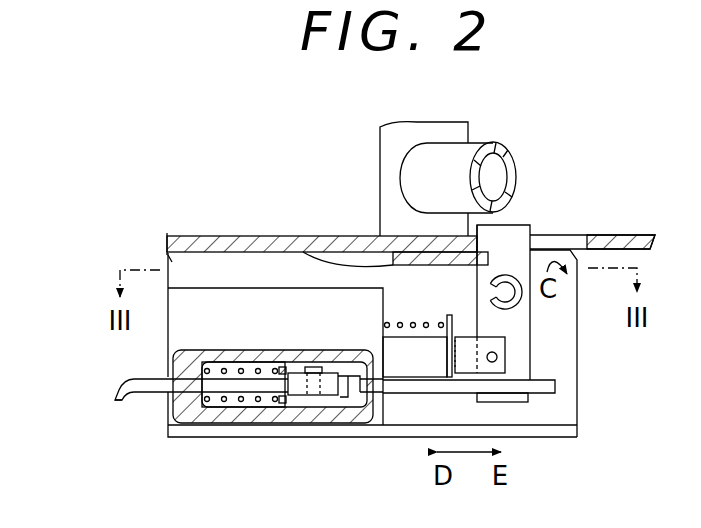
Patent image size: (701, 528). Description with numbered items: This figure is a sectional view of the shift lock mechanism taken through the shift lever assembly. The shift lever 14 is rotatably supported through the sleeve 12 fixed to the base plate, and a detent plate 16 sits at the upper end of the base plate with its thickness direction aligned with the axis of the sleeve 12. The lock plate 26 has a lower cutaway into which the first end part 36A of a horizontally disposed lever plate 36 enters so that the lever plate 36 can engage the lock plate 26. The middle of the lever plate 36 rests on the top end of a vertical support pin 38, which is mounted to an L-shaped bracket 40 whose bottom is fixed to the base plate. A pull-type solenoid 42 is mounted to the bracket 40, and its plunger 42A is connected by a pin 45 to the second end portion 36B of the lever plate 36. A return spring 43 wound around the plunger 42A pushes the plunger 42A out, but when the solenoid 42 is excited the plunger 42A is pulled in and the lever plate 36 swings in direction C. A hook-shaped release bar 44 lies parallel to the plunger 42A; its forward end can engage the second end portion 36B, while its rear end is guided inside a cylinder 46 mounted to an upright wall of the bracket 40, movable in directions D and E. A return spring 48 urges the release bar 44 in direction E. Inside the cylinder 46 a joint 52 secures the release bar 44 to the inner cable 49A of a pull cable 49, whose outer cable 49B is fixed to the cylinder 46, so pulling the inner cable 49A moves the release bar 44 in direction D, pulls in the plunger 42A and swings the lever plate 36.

The sleeve 12 is at (380, 165).
The shift lever 14 is at (495, 132).
The detent plate 16 is at (633, 240).
The lock plate 26 is at (298, 238).
The lever plate 36 is at (535, 292).
The first end part of lever plate 36A is at (507, 247).
The second end portion of lever plate 36B is at (520, 367).
The support pin 38 is at (505, 291).
The L-shaped bracket 40 is at (578, 412).
The solenoid 42 is at (180, 318).
The plunger 42A is at (425, 422).
The return spring 43 is at (412, 322).
The release bar 44 is at (425, 360).
The pin 45 is at (493, 362).
The cylinder 46 is at (170, 410).
The return spring 48 is at (268, 403).
The pull cable 49 is at (117, 405).
The inner cable 49A is at (218, 387).
The outer cable 49B is at (140, 380).
The joint 52 is at (302, 372).